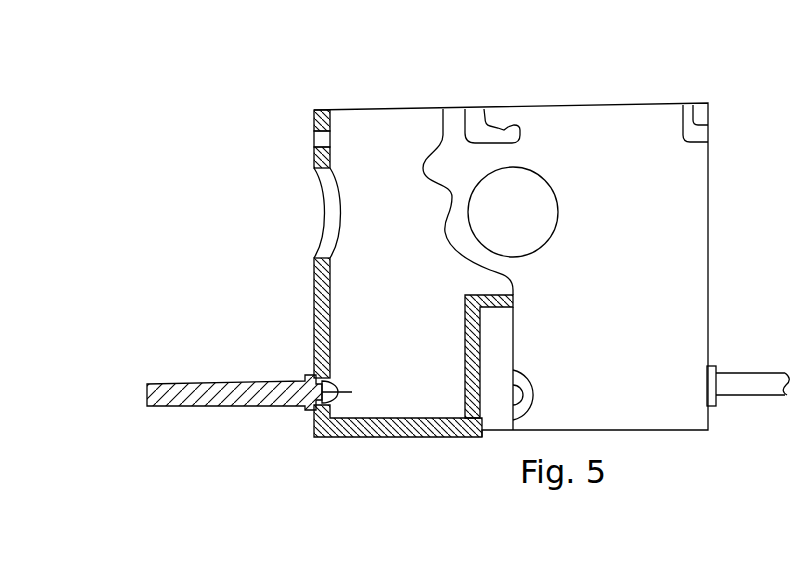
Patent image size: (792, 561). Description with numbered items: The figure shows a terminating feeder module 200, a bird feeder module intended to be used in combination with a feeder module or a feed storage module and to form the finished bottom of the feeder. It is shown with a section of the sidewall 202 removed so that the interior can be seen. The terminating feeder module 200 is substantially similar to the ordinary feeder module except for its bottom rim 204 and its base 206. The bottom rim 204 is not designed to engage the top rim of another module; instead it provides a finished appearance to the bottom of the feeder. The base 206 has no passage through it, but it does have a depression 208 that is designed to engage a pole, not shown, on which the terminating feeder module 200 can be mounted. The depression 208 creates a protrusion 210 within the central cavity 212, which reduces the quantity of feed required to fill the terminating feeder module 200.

The terminating feeder module 200 is at (289, 90).
The sidewall 202 is at (314, 291).
The bottom rim 204 is at (315, 422).
The base 206 is at (316, 467).
The depression 208 is at (497, 432).
The protrusion 210 is at (461, 305).
The central cavity 212 is at (418, 366).